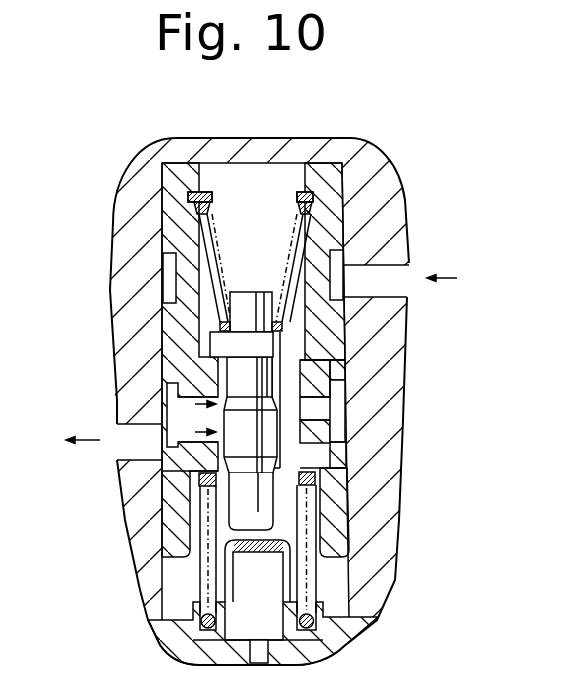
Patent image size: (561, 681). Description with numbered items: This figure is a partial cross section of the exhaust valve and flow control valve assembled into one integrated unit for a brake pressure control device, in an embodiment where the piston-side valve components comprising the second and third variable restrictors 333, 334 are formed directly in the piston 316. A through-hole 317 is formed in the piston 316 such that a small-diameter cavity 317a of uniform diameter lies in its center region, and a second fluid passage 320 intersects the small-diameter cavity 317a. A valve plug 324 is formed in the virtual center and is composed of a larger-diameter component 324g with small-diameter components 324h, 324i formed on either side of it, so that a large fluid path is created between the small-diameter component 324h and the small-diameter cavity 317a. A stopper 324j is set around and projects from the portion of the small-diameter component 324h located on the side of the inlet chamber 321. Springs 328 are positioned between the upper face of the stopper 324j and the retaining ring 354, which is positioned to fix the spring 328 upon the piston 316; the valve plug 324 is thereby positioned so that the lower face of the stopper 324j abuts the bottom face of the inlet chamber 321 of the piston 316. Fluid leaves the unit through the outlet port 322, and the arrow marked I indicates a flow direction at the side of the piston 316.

The piston 316 is at (352, 143).
The through-hole 317 is at (262, 178).
The small-diameter cavity 317a is at (345, 361).
The port I is at (398, 290).
The inlet chamber 321 is at (185, 233).
The second variable restrictor 333 is at (205, 410).
The third variable restrictor 334 is at (210, 432).
The second fluid passage 320 is at (318, 407).
The outlet port 322 is at (305, 420).
The retaining ring 354 is at (199, 163).
The spring 328 is at (312, 212).
The valve plug 324 is at (238, 295).
The small-diameter component 324h is at (221, 323).
The stopper 324j is at (214, 345).
The larger-diameter component 324g is at (247, 503).
The small-diameter component 324i is at (200, 508).